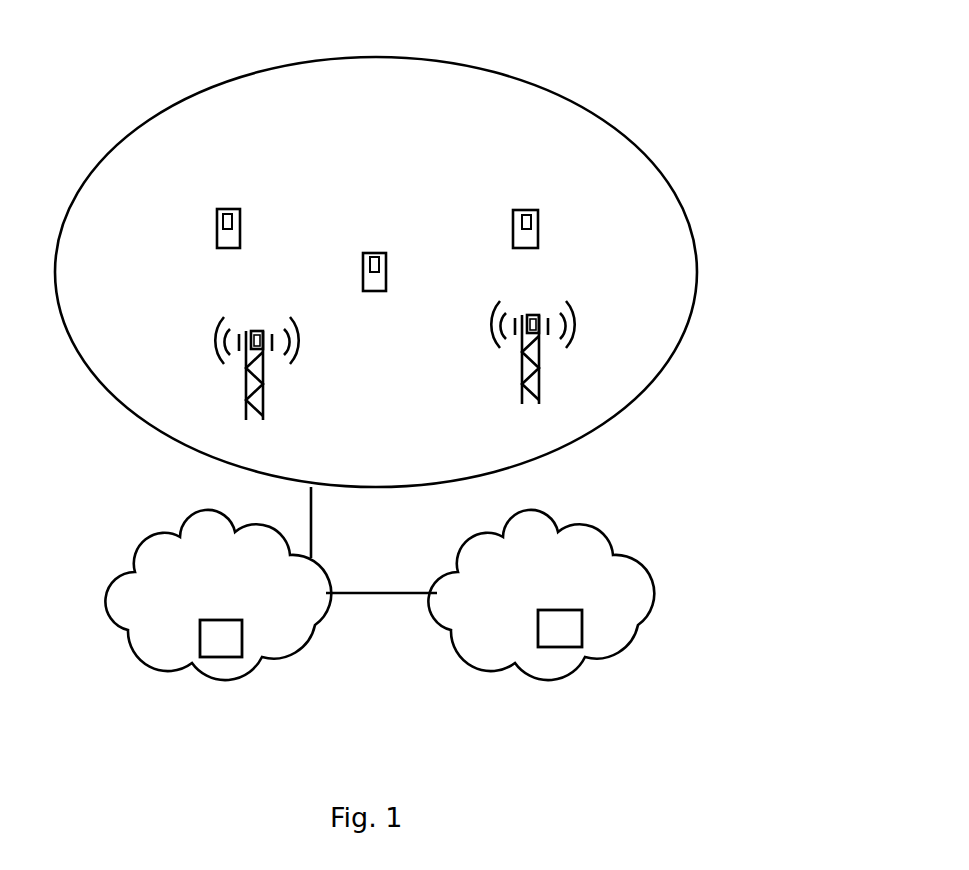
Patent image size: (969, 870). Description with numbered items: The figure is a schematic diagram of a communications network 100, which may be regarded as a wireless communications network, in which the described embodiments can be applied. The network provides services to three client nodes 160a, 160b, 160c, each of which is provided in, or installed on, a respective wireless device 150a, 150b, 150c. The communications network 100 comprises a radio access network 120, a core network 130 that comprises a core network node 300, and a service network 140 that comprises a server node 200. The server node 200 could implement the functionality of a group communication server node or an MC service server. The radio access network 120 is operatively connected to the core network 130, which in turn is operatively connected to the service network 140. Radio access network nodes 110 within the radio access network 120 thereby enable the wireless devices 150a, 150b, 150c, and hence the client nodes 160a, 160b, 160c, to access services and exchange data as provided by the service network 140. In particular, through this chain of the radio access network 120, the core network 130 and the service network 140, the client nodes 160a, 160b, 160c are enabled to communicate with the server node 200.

The communications network 100 is at (692, 58).
The radio access network node 110 is at (264, 400).
The radio access network 120 is at (130, 411).
The core network 130 is at (235, 606).
The service network 140 is at (565, 594).
The wireless device 150a is at (217, 232).
The wireless device 150b is at (387, 272).
The wireless device 150c is at (539, 232).
The client node 160a is at (228, 212).
The client node 160b is at (374, 255).
The client node 160c is at (524, 212).
The server node 200 is at (555, 647).
The core network node 300 is at (211, 657).